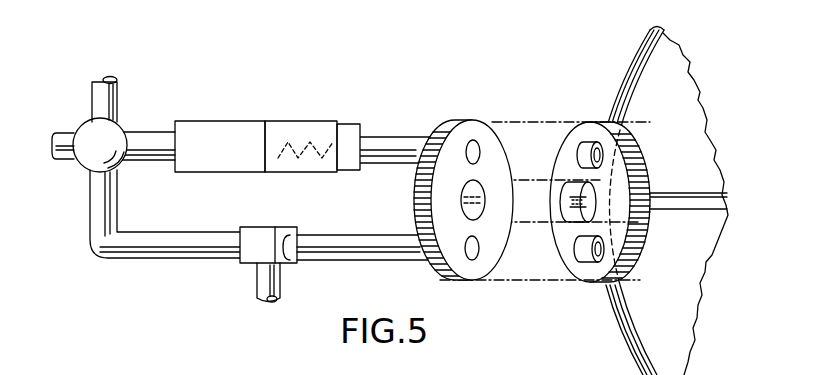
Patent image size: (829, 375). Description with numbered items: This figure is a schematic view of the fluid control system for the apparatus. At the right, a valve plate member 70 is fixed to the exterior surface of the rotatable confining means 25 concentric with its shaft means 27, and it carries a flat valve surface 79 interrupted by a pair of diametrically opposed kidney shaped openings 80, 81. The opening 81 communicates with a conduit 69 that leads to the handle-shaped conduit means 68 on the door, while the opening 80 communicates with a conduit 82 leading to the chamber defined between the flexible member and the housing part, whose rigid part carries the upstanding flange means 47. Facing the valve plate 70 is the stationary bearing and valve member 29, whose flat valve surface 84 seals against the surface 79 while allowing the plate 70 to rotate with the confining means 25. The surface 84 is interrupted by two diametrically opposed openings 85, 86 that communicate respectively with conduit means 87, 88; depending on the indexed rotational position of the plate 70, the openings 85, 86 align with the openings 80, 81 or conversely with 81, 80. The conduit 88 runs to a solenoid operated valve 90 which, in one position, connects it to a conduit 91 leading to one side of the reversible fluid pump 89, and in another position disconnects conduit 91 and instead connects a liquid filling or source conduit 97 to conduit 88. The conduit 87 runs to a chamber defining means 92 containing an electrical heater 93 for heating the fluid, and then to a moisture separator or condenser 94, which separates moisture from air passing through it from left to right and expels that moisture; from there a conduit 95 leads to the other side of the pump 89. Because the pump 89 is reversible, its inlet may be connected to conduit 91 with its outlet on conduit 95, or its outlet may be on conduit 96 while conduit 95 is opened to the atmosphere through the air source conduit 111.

The confining means 25 is at (656, 77).
The shaft means 27 is at (563, 227).
The stationary bearing and valve member 29 is at (476, 195).
The upstanding flange means 47 is at (675, 200).
The conduit means 68 is at (247, 374).
The conduit 69 is at (625, 332).
The valve plate member 70 is at (586, 191).
The flat valve surface 79 is at (577, 137).
The kidney shaped opening 80 is at (578, 152).
The kidney shaped opening 81 is at (578, 264).
The conduit 82 is at (642, 47).
The flat valve surface 84 is at (492, 142).
The opening 85 is at (476, 141).
The opening 86 is at (482, 252).
The conduit means 87 is at (390, 142).
The conduit means 88 is at (336, 250).
The reversible fluid pump 89 is at (88, 132).
The solenoid operated valve 90 is at (258, 232).
The conduit 91 is at (186, 258).
The chamber defining means 92 is at (307, 122).
The electrical heater 93 is at (313, 138).
The moisture separator or condenser 94 is at (219, 132).
The conduit 95 is at (145, 138).
The conduit 96 is at (63, 164).
The liquid filling or source conduit 97 is at (260, 282).
The air source conduit 111 is at (93, 97).